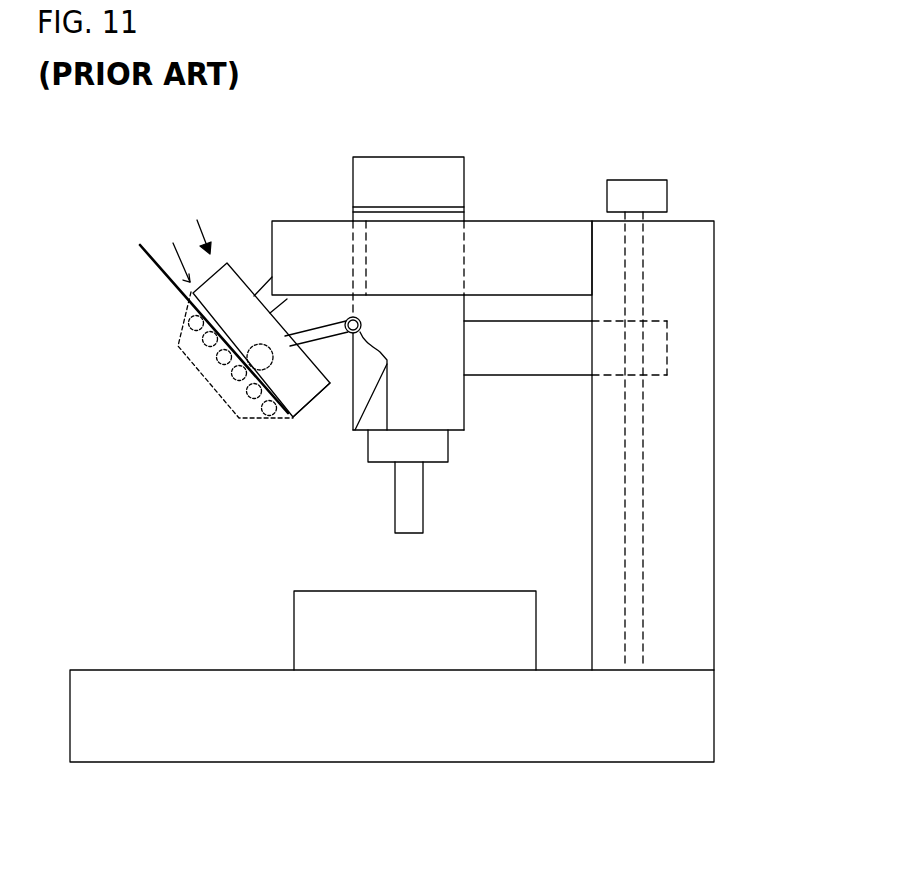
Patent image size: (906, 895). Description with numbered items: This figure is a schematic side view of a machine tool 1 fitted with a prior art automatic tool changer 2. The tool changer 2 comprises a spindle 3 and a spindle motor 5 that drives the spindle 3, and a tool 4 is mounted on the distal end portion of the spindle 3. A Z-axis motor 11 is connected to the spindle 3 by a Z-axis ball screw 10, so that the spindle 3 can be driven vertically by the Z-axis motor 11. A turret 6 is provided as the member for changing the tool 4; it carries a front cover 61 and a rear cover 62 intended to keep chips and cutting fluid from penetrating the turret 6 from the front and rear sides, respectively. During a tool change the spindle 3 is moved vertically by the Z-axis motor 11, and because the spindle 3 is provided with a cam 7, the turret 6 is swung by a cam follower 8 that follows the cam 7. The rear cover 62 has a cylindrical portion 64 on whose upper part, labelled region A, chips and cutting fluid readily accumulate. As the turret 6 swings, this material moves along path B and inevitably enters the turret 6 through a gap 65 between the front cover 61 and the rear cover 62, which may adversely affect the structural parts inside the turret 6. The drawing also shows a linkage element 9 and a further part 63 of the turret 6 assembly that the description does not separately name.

The machine tool 1 is at (733, 135).
The automatic tool changer 2 is at (229, 368).
The spindle 3 is at (464, 403).
The tool 4 is at (423, 508).
The spindle motor 5 is at (428, 157).
The turret 6 is at (180, 347).
The cam 7 is at (386, 363).
The cam follower 8 is at (349, 318).
The arm 9 is at (313, 327).
The Z-axis ball screw 10 is at (645, 408).
The Z-axis motor 11 is at (633, 178).
The front cover 61 is at (187, 327).
The rear cover 62 is at (299, 412).
The wheel 63 is at (252, 378).
The cylindrical portion 64 is at (224, 262).
The gap 65 is at (201, 320).